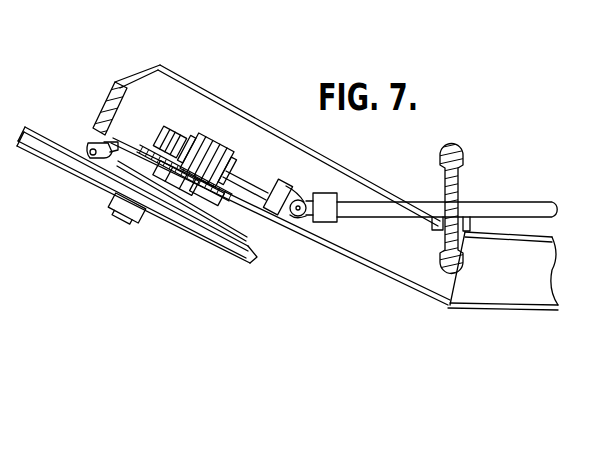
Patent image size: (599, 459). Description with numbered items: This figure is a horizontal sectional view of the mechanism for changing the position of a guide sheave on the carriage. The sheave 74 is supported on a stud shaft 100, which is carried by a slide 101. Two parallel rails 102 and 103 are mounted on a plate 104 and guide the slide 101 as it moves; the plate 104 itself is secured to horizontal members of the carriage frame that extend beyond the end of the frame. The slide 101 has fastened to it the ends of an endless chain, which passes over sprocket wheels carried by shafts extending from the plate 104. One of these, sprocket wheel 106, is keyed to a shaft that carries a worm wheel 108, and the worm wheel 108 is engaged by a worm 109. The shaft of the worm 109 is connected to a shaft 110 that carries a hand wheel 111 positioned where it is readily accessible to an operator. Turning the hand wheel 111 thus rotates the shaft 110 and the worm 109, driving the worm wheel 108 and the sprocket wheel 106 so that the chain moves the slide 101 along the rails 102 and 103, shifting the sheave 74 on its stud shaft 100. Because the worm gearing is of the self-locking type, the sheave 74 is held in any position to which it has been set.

The sheave 74 is at (187, 228).
The stud shaft 100 is at (133, 216).
The slide 101 is at (93, 142).
The rail 102 is at (90, 147).
The rail 103 is at (248, 237).
The plate 104 is at (118, 102).
The sprocket wheel 106 is at (210, 195).
The worm wheel 108 is at (158, 130).
The worm 109 is at (197, 143).
The shaft 110 is at (512, 204).
The hand wheel 111 is at (464, 150).